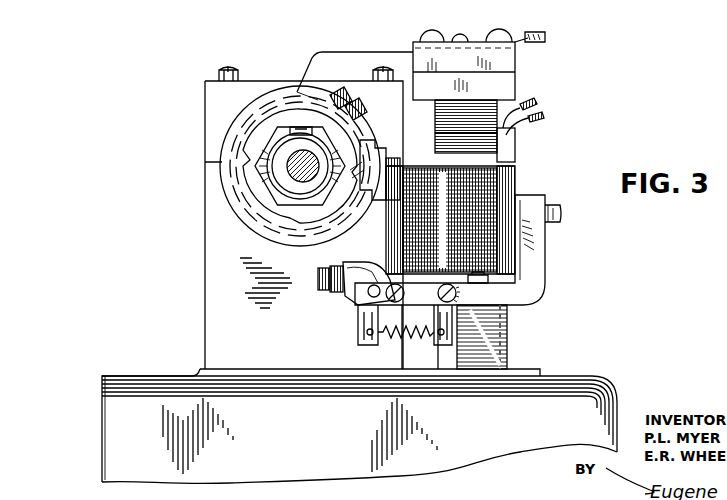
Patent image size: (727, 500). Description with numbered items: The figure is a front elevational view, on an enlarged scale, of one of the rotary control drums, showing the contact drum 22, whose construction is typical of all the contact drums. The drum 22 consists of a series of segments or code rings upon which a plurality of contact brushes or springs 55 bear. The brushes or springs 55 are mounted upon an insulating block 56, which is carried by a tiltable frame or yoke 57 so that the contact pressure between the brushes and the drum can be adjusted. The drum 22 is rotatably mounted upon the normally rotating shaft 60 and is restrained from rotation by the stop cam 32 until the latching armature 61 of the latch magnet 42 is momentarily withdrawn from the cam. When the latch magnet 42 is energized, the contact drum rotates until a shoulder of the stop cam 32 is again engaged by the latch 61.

The contact drum 22 is at (232, 144).
The stop cam 32 is at (263, 188).
The shaft 60 is at (296, 183).
The contact brushes or springs 55 is at (347, 51).
The insulating block 56 is at (505, 61).
The tiltable frame or yoke 57 is at (493, 111).
The latching armature 61 is at (353, 212).
The latch magnet 42 is at (497, 196).